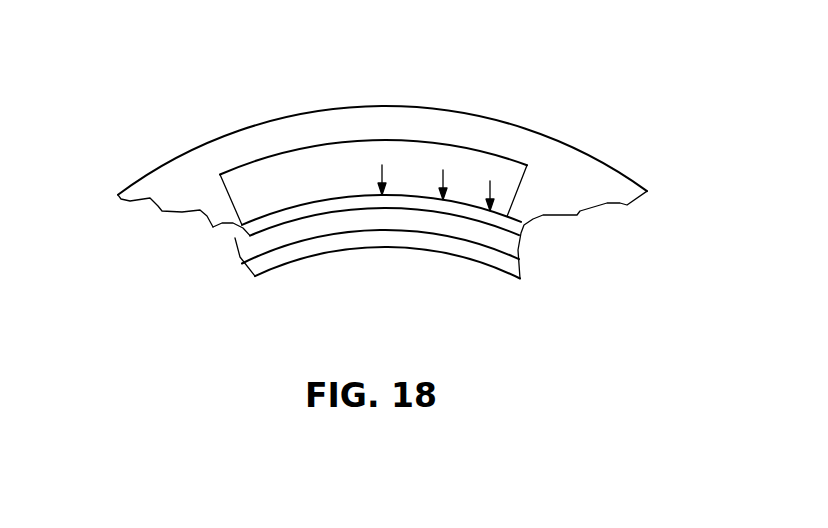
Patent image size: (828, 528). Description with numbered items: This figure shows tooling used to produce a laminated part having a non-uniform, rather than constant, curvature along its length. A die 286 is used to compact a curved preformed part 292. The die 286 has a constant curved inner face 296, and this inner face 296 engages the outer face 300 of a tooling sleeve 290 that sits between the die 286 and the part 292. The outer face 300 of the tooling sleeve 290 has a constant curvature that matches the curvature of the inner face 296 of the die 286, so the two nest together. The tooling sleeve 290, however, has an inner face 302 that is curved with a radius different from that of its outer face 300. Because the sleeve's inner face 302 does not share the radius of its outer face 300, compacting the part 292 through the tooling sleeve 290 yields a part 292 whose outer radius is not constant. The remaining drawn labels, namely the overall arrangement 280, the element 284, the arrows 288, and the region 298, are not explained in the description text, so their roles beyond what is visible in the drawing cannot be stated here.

The assembly 280 is at (172, 67).
The housing body 284 is at (580, 175).
The die 286 is at (360, 157).
The applied force arrows 288 is at (322, 189).
The tooling sleeve 290 is at (215, 229).
The curved preformed part 292 is at (263, 260).
The inner face of the die 296 is at (472, 227).
The upper region 298 is at (467, 128).
The outer face of the tooling sleeve 300 is at (404, 185).
The inner face of the tooling sleeve 302 is at (361, 260).